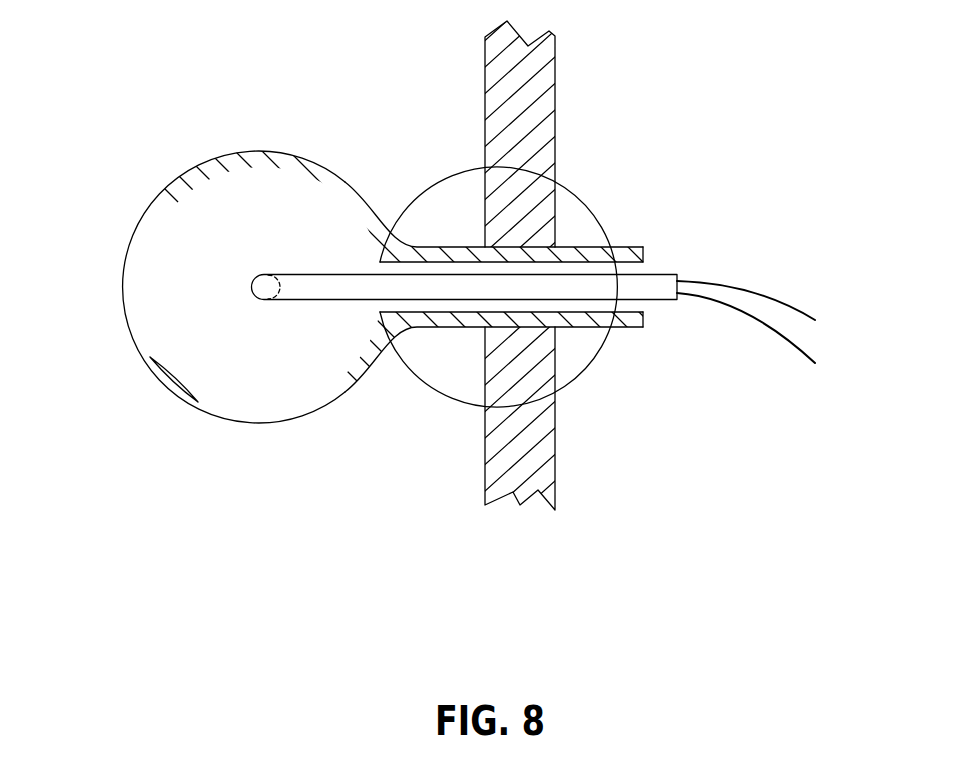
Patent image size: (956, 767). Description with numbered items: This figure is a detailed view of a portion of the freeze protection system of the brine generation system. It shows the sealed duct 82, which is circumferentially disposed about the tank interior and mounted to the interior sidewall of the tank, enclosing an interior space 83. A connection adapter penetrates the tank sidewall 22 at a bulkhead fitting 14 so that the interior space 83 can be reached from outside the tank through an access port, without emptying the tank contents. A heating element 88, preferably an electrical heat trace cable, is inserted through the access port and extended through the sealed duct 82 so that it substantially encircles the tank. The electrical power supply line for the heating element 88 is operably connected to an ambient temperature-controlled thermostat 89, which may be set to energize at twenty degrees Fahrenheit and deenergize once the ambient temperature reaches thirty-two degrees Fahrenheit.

The bulkhead fitting 14 is at (560, 246).
The tank sidewall 22 is at (555, 125).
The sealed duct 82 is at (130, 320).
The interior space 83 is at (186, 233).
The heating element 88 is at (267, 287).
The thermostat 89 is at (652, 312).